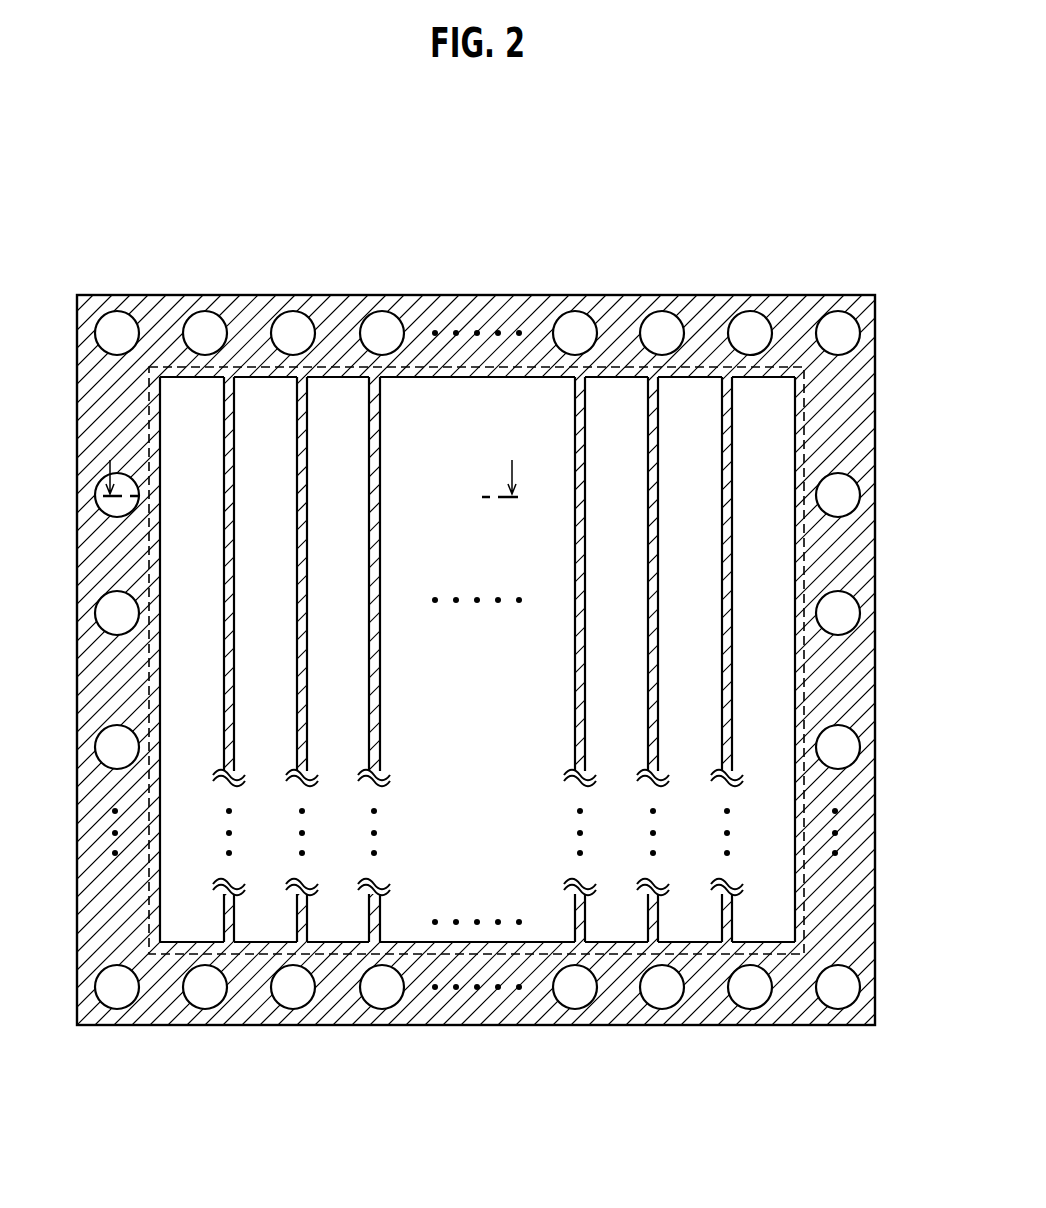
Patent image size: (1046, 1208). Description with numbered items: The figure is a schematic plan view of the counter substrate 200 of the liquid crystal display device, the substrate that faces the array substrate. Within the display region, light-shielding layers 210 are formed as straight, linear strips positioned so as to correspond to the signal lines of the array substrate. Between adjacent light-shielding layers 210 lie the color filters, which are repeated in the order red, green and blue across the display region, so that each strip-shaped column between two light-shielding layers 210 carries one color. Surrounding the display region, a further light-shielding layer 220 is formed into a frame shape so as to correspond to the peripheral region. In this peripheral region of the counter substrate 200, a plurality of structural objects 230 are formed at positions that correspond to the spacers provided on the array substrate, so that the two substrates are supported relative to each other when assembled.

The counter substrate 200 is at (703, 178).
The light-shielding layer 210 is at (380, 461).
The light-shielding layer 220 is at (467, 295).
The structural object 230 is at (862, 295).